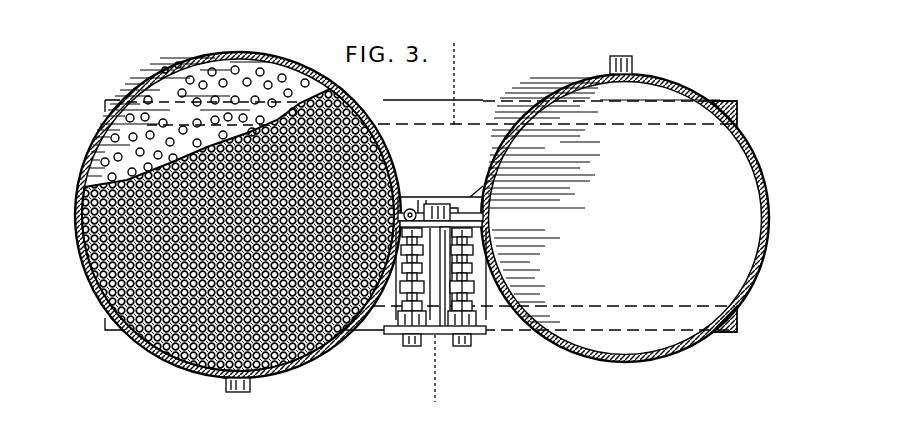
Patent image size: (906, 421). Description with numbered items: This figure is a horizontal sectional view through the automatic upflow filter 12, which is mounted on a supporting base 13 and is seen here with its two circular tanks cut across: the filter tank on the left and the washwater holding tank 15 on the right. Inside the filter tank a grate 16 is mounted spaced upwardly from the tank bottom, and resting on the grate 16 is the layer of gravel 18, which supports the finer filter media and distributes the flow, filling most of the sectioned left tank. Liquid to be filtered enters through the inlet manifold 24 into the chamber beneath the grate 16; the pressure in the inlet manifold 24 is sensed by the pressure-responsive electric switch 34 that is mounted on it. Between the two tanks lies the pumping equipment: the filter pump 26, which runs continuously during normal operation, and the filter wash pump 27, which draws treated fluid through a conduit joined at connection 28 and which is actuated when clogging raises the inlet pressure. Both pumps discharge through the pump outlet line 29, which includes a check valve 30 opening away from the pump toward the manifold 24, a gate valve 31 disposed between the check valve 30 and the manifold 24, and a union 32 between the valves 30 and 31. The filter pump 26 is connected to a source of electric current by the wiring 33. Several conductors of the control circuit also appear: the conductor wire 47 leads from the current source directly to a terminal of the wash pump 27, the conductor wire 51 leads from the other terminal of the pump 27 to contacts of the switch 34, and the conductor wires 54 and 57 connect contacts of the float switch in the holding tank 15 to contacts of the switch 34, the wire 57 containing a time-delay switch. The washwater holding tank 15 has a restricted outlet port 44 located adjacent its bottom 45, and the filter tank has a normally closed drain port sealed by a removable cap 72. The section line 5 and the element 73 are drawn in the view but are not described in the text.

The section line 5- 5 is at (435, 397).
The filter 12 is at (84, 279).
The supporting base 13 is at (723, 100).
The washwater holding tank 15 is at (760, 161).
The grate 16 is at (96, 140).
The layer of gravel 18 is at (137, 343).
The inlet manifold 24 is at (503, 160).
The filter pump 26 is at (380, 313).
The filter wash pump 27 is at (487, 288).
The connection 28 is at (423, 334).
The pump outlet line 29 is at (484, 205).
The check valve 30 is at (487, 267).
The gate valve 31 is at (483, 226).
The union 32 is at (510, 227).
The wiring 33 is at (380, 334).
The pressure-responsive electric switch 34 is at (483, 193).
The restricted outlet port 44 is at (636, 57).
The bottom 45 is at (745, 188).
The conductor wire 47 is at (441, 345).
The conductor wire 51 is at (437, 205).
The conductor wire 54 is at (453, 208).
The conductor wire 57 is at (420, 200).
The removable cap 72 is at (225, 393).
The terminal 73 is at (412, 209).